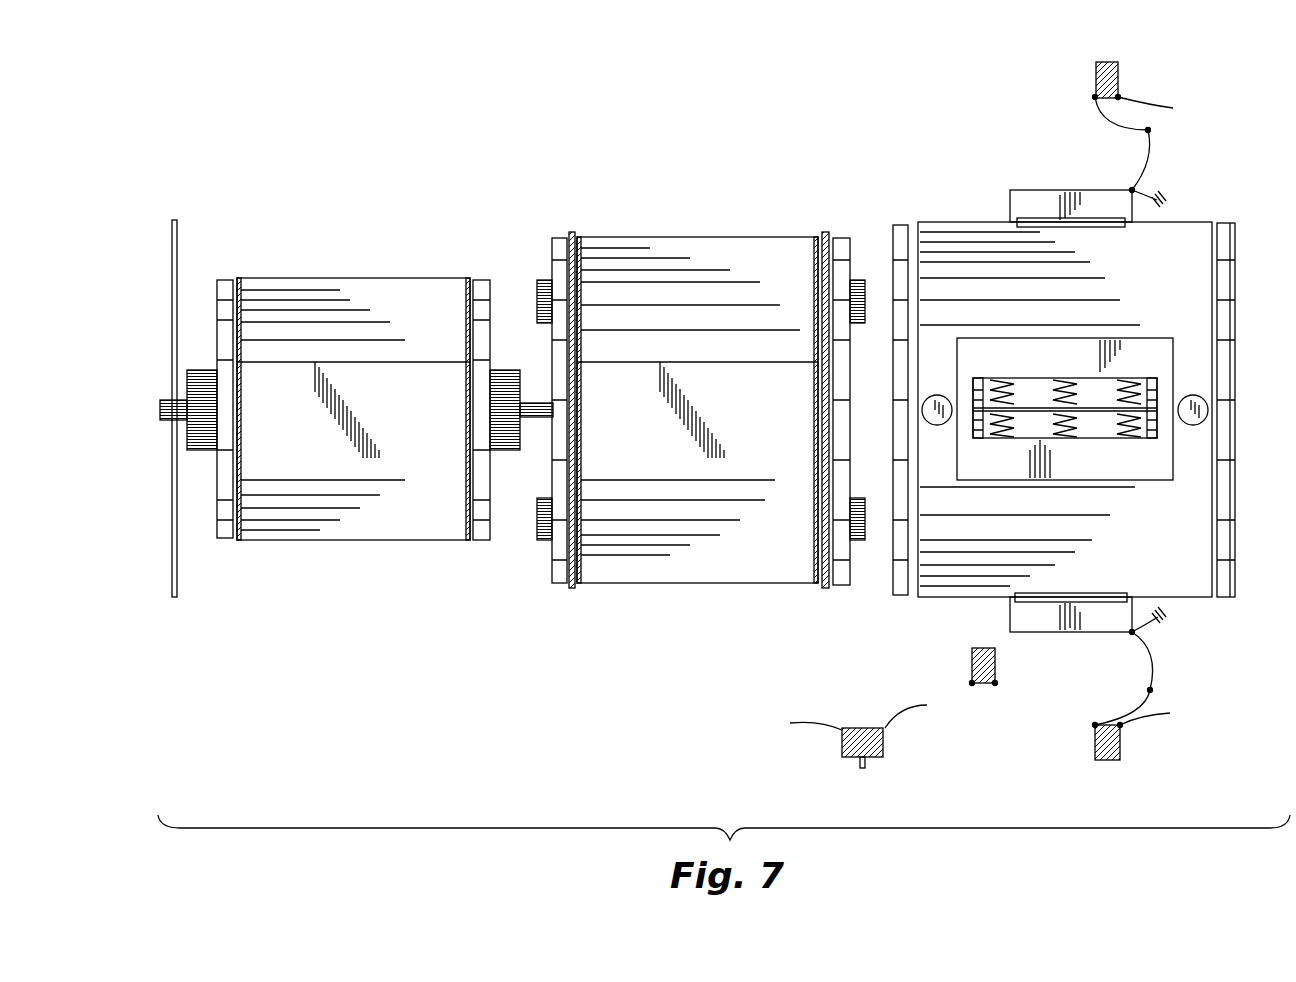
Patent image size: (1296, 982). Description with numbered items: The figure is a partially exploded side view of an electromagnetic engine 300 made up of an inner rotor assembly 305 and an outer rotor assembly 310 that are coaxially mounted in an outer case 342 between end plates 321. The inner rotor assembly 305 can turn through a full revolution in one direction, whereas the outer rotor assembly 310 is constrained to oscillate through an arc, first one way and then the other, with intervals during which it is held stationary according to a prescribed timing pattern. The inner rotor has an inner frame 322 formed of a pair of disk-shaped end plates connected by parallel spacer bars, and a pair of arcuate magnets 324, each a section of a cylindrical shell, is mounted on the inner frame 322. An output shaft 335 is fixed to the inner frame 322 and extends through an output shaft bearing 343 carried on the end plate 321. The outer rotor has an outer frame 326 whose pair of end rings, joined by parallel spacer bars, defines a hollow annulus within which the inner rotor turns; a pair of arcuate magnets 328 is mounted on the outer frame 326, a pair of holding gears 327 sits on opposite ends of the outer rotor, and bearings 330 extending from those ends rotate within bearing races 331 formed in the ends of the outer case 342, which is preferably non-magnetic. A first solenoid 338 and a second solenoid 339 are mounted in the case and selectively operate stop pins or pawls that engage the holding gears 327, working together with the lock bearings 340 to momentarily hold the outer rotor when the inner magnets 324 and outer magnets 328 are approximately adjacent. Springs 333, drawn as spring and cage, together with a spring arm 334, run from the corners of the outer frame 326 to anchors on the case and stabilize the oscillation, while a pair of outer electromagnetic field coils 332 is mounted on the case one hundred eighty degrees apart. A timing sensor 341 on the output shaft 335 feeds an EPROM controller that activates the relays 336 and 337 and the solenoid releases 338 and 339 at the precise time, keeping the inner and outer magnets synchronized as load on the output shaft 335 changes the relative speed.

The electromagnetic engine 300 is at (643, 157).
The inner rotor assembly 305 is at (287, 585).
The outer rotor assembly 310 is at (612, 628).
The end plate 321 is at (174, 220).
The inner frame 322 is at (226, 280).
The arcuate magnets 324 is at (365, 278).
The outer frame 326 is at (840, 238).
The holding gears 327 is at (825, 590).
The arcuate magnets 328 is at (698, 237).
The bearings 330 is at (858, 280).
The bearing races 331 is at (1227, 223).
The outer electromagnetic field coils 332 is at (1077, 190).
The springs 333 is at (1083, 372).
The spring arm 334 is at (1110, 413).
The output shaft 335 is at (165, 400).
The relay 336 is at (1105, 762).
The relay 337 is at (1095, 78).
The first solenoid 338 is at (1207, 394).
The second solenoid 339 is at (928, 397).
The lock bearings 340 is at (928, 425).
The timing sensor 341 is at (883, 747).
The outer case 342 is at (985, 222).
The output shaft bearing 343 is at (207, 452).